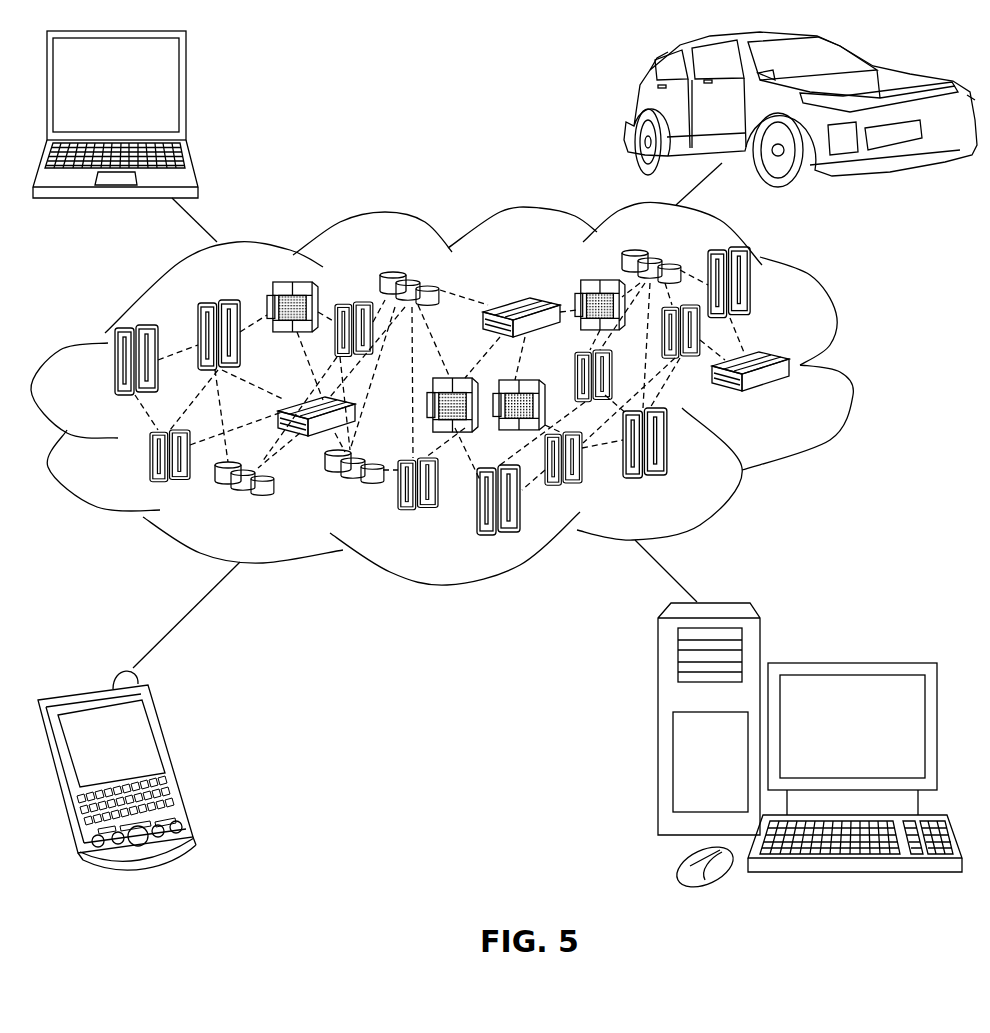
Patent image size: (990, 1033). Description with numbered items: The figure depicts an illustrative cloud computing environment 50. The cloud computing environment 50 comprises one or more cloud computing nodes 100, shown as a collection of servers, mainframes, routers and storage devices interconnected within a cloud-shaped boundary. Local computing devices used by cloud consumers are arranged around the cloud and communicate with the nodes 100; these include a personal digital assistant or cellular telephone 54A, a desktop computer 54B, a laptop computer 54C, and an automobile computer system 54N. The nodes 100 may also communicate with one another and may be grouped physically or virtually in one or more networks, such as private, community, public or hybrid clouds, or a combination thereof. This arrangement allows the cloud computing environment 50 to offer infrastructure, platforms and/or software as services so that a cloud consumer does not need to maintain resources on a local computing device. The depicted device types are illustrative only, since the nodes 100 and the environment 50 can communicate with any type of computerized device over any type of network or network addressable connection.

The personal digital assistant or cellular telephone 54A is at (177, 755).
The desktop computer 54B is at (850, 662).
The laptop computer 54C is at (187, 92).
The automobile computer system 54N is at (628, 108).
The cloud computing environment 50 is at (474, 393).
The cloud computing node 100 is at (792, 399).